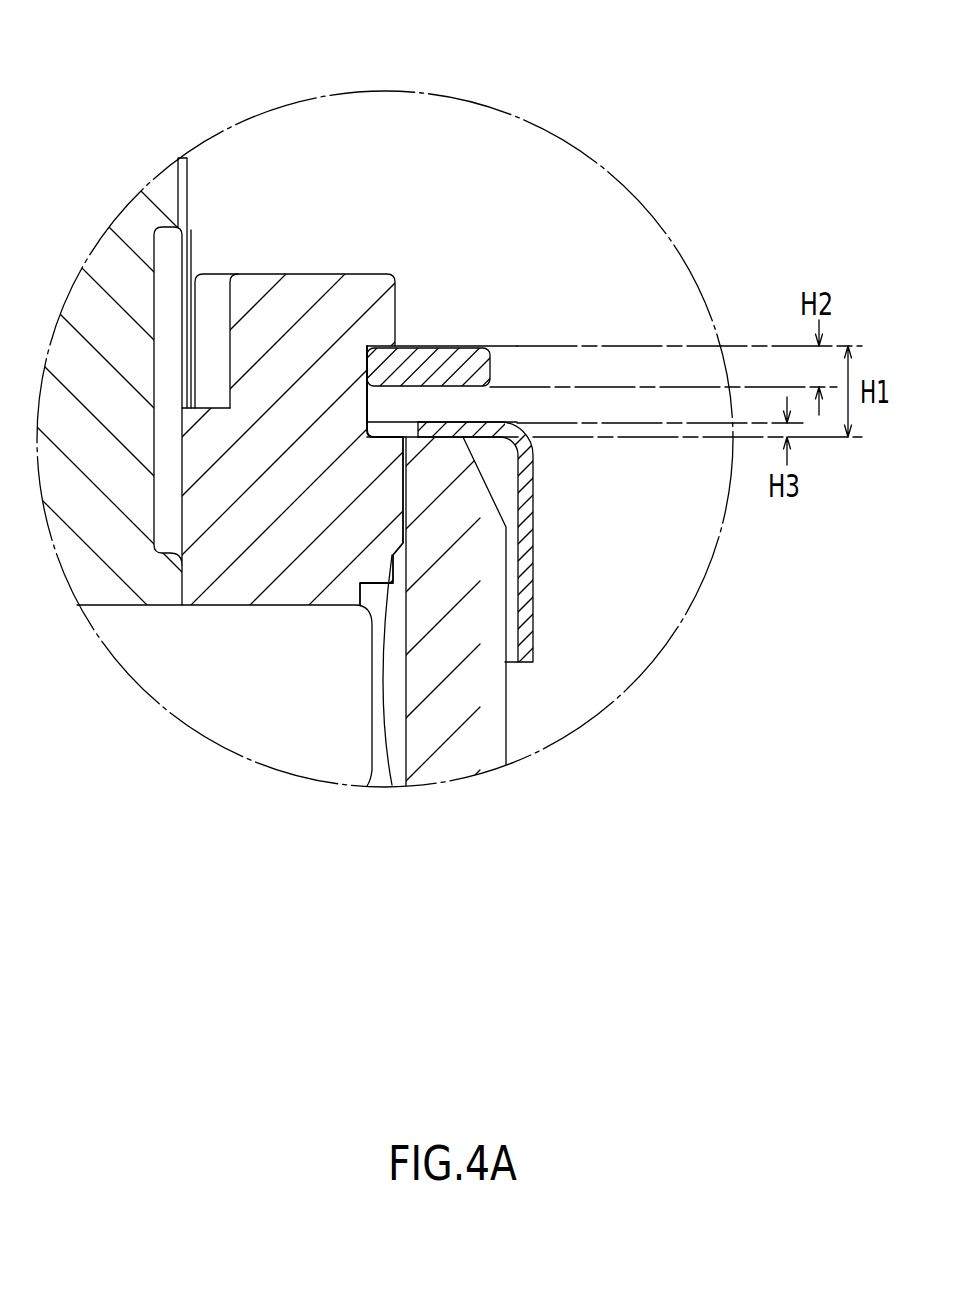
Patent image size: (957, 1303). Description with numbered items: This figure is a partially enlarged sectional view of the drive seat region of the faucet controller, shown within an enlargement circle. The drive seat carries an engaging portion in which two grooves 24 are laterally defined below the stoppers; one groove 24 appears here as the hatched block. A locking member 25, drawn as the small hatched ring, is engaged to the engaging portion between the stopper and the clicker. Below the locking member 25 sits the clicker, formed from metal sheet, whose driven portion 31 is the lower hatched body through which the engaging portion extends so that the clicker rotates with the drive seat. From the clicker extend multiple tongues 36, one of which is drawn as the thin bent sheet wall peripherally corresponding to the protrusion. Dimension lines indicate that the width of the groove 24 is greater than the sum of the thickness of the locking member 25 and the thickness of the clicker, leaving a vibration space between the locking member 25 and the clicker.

The groove 24 is at (363, 413).
The locking member 25 is at (447, 370).
The driven portion 31 is at (468, 432).
The tongue 36 is at (520, 592).